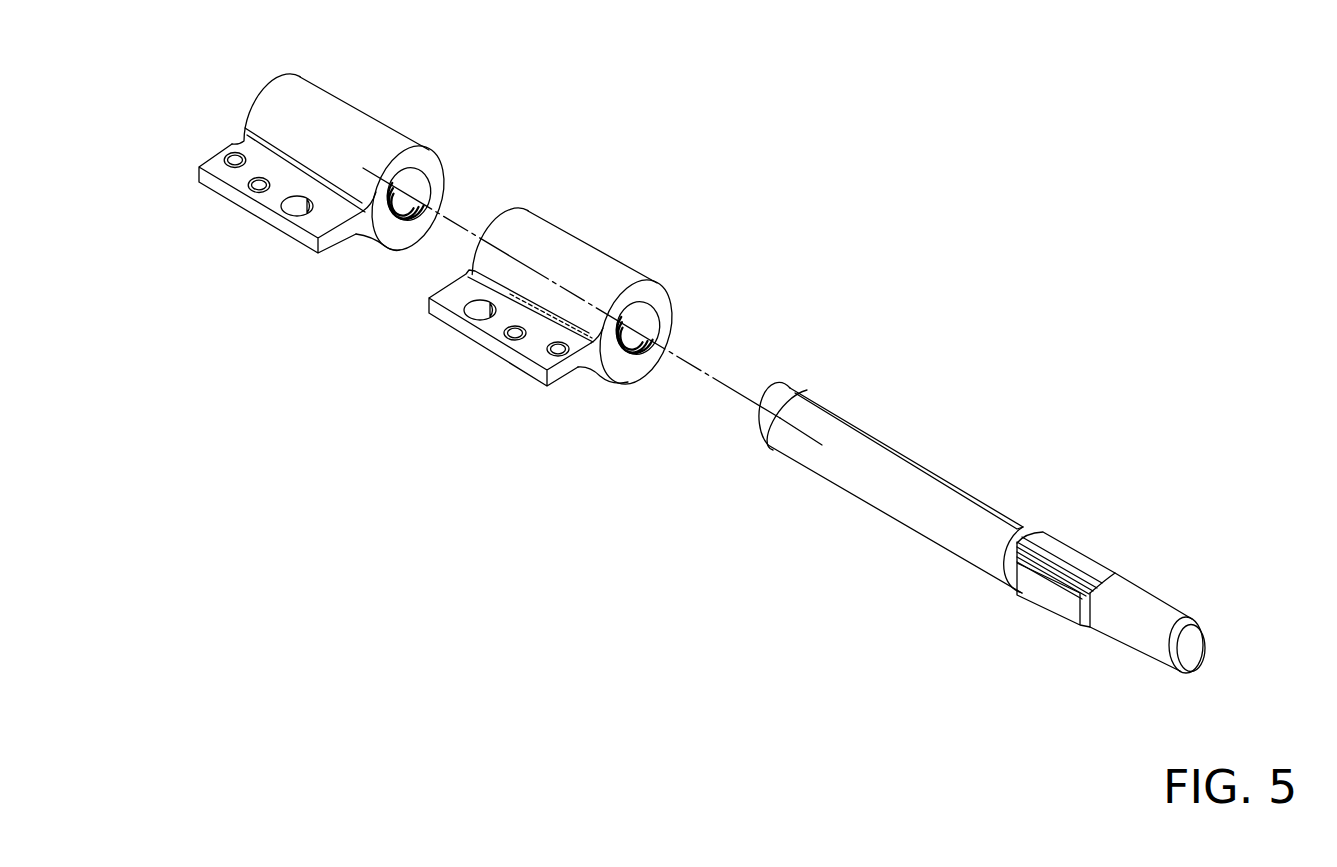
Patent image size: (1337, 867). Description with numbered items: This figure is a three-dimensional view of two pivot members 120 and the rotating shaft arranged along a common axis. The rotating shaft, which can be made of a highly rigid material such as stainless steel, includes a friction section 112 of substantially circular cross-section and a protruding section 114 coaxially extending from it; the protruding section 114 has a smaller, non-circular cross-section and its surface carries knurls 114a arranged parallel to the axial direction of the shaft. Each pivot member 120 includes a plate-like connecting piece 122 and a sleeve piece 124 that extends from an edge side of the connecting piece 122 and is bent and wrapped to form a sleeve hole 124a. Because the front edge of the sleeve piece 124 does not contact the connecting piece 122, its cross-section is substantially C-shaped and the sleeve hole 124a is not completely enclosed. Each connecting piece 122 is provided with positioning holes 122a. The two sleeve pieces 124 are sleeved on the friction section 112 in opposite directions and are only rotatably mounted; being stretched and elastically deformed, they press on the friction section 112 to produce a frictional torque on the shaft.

The friction section 112 is at (982, 559).
The protruding section 114 is at (1099, 582).
The knurls 114a is at (1072, 563).
The pivot member 120 is at (431, 235).
The connecting piece 122 is at (384, 278).
The positioning hole 122a is at (300, 198).
The sleeve piece 124 is at (458, 235).
The sleeve hole 124a is at (393, 225).